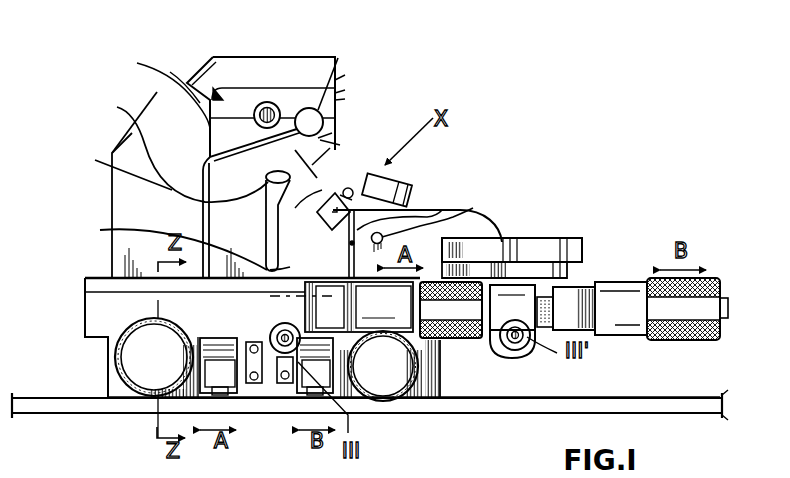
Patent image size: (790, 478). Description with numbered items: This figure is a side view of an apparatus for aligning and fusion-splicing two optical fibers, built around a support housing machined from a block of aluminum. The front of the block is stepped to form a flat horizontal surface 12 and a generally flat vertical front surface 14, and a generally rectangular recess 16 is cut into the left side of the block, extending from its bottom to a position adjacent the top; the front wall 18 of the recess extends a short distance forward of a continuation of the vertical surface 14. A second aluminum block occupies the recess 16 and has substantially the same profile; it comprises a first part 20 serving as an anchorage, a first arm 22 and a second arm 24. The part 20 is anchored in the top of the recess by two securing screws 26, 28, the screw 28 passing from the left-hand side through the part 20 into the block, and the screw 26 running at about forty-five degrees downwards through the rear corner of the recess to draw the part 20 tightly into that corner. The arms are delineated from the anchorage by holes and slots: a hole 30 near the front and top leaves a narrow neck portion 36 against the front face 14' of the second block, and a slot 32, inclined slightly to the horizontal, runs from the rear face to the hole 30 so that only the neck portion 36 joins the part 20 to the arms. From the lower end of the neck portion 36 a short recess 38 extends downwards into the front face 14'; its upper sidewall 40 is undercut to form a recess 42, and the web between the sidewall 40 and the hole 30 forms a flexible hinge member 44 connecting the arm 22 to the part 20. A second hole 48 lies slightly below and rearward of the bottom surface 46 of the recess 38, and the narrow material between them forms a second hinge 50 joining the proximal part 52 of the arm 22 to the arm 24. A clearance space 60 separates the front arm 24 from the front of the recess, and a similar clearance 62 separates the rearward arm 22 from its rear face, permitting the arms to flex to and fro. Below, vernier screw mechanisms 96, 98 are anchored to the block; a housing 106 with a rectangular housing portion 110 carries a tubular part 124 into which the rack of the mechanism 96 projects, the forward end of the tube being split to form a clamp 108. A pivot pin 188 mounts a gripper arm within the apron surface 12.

The flat horizontal surface 12 is at (477, 210).
The vertical front surface 14 is at (381, 71).
The front face of block 14' is at (392, 83).
The rectangular recess 16 is at (338, 58).
The front wall of recess 18 is at (430, 205).
The first part 20 is at (238, 112).
The first arm 22 is at (132, 137).
The second arm 24 is at (100, 230).
The securing screw 26 is at (200, 67).
The securing screw 28 is at (174, 75).
The hole 30 is at (337, 80).
The slot 32 is at (177, 100).
The neck portion 36 is at (324, 113).
The recess 38 is at (320, 160).
The upper sidewall 40 is at (343, 140).
The recess 42 is at (310, 155).
The flexible hinge member 44 is at (320, 137).
The bottom surface of recess 46 is at (319, 210).
The second hole 48 is at (117, 165).
The second hinge 50 is at (266, 177).
The proximal part of arm 52 is at (160, 86).
The clearance space 60 is at (413, 207).
The clearance 62 is at (176, 148).
The vernier screw mechanism 96 is at (447, 343).
The vernier screw mechanism 98 is at (662, 345).
The housing 106 is at (150, 300).
The clamp 108 is at (273, 393).
The rectangular housing portion 110 is at (110, 387).
The tubular part 124 is at (232, 322).
The pivot pin 188 is at (467, 203).